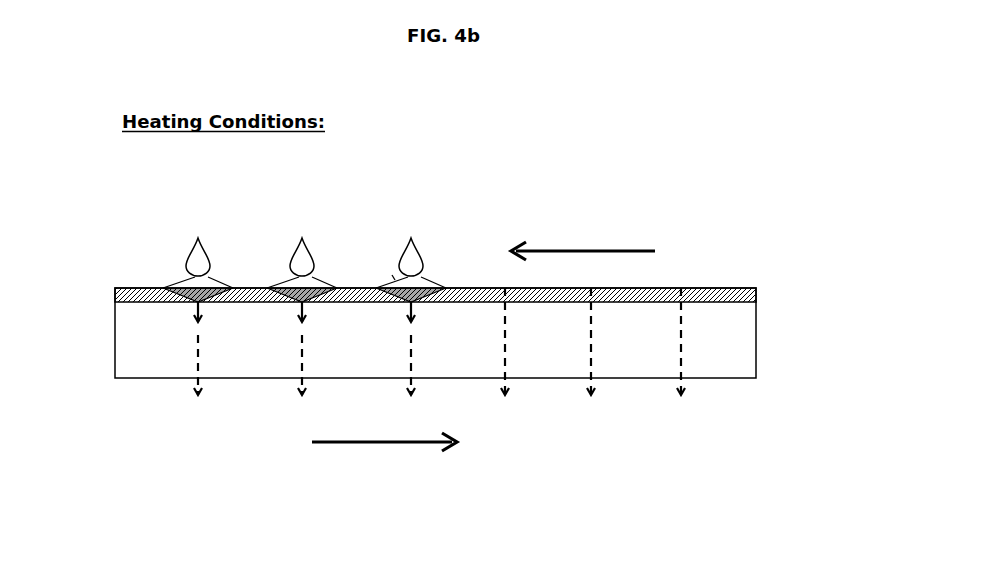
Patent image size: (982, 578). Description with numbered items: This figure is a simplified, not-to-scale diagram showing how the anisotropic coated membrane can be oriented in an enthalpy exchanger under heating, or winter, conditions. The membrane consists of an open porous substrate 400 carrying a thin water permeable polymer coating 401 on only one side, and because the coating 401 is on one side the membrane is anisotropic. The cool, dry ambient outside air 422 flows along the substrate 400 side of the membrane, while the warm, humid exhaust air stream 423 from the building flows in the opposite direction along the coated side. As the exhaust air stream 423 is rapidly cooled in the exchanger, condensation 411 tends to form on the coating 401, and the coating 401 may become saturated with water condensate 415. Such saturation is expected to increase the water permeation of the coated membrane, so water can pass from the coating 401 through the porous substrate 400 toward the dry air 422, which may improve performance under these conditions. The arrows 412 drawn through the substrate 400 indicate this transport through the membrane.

The porous substrate 400 is at (718, 362).
The coating 401 is at (735, 289).
The condensation 411 is at (198, 240).
The heat flow arrows 412 is at (200, 410).
The water condensate 415 is at (392, 275).
The cool dry ambient air 422 is at (390, 445).
The exhaust air stream 423 is at (628, 250).